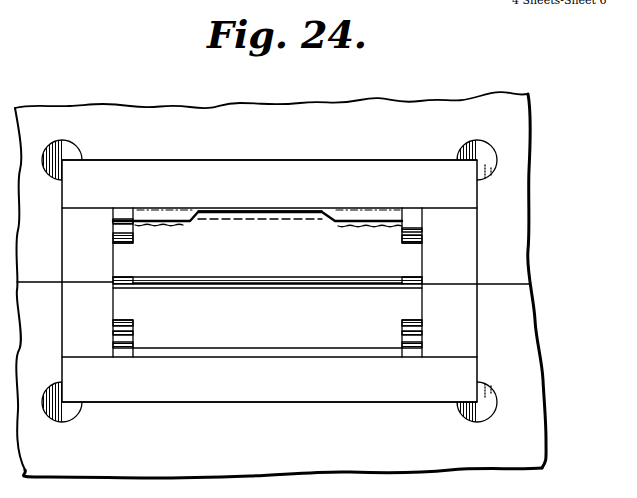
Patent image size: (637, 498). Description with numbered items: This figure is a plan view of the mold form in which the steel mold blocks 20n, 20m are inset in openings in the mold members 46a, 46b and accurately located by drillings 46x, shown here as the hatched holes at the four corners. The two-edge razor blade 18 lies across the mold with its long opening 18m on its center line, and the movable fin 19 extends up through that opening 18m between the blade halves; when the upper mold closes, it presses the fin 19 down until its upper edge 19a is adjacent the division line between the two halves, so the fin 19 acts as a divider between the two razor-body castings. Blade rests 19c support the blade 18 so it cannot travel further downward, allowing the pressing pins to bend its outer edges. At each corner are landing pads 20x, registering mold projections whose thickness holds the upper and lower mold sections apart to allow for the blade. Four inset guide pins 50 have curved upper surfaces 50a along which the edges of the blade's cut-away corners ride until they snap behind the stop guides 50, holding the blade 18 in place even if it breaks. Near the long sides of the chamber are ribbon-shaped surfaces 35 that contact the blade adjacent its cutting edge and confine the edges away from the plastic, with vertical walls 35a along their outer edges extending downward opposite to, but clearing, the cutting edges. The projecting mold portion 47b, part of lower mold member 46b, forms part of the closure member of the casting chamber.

The blade 18 is at (203, 227).
The long opening 18m is at (240, 269).
The fin 19 is at (250, 288).
The upper edge of the fin 19a is at (283, 283).
The blade rests 19c is at (423, 283).
The steel mold block 20n is at (298, 165).
The steel mold block 20m is at (240, 391).
The landing pads 20x is at (124, 208).
The ribbon-shaped surfaces 35 is at (362, 215).
The vertical walls 35a is at (287, 212).
The mold member 46a is at (177, 106).
The mold member 46b is at (528, 330).
The drillings 46x is at (67, 152).
The mold portion 47b is at (70, 328).
The guide pins 50 is at (422, 227).
The curved upper surface 50a is at (422, 244).